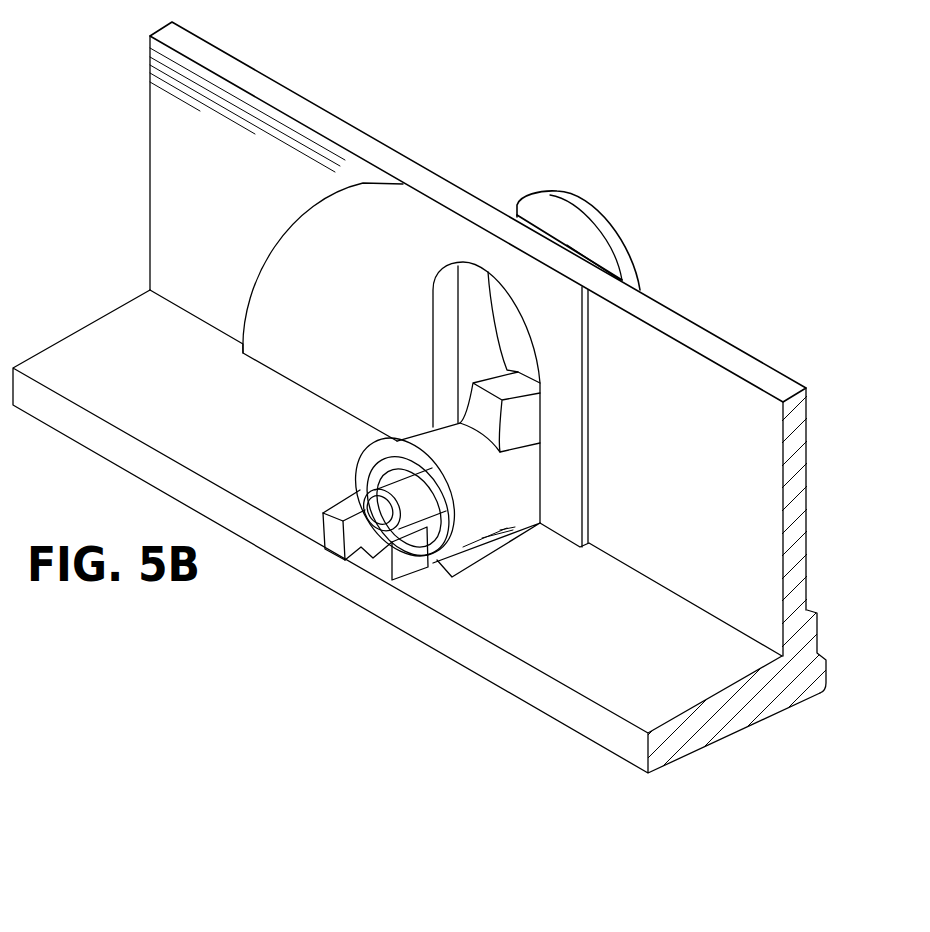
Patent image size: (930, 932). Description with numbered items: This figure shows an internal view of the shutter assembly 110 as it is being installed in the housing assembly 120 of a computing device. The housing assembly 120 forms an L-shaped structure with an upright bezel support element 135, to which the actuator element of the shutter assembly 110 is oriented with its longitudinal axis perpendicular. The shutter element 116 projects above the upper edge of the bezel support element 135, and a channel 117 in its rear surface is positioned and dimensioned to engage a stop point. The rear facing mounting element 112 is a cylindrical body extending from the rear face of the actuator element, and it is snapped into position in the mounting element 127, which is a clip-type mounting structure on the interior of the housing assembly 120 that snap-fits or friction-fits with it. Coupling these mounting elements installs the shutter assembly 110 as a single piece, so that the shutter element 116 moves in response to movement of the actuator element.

The shutter assembly 110 is at (422, 425).
The rear facing mounting element 112 is at (380, 486).
The shutter element 116 is at (612, 215).
The channel 117 is at (553, 227).
The housing assembly 120 is at (720, 743).
The mounting element 127 is at (372, 568).
The bezel support element 135 is at (808, 410).